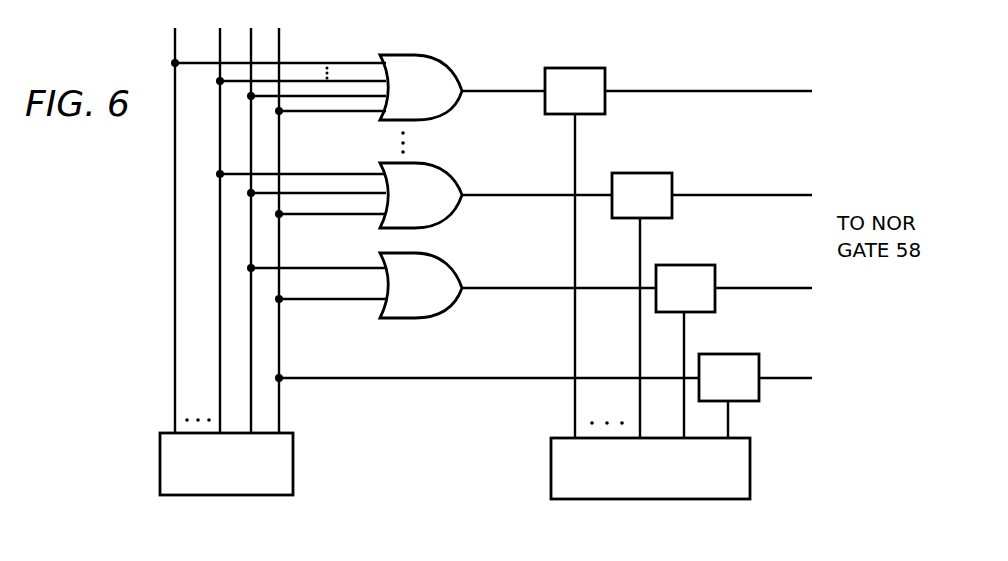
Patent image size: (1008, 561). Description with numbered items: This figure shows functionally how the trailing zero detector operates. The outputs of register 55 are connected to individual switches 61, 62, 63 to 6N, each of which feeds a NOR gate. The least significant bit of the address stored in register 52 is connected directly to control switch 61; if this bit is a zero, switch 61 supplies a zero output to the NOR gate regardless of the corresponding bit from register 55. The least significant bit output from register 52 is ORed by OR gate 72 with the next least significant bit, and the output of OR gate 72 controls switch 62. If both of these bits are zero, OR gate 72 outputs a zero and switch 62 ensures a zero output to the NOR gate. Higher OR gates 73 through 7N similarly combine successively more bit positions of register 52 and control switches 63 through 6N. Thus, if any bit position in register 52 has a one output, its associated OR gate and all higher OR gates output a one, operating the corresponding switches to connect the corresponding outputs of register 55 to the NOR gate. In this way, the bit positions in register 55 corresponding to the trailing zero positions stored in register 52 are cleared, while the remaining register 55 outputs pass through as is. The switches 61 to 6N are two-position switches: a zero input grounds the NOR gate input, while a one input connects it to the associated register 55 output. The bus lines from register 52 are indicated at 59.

The OR gate 7N is at (440, 63).
The OR gate 73 is at (448, 178).
The OR gate 72 is at (448, 268).
The switch 6N is at (590, 68).
The switch 63 is at (648, 173).
The switch 62 is at (692, 265).
The switch 61 is at (738, 354).
The register 52 is at (293, 477).
The register 55 is at (750, 471).
The bus lines 59 is at (220, 409).